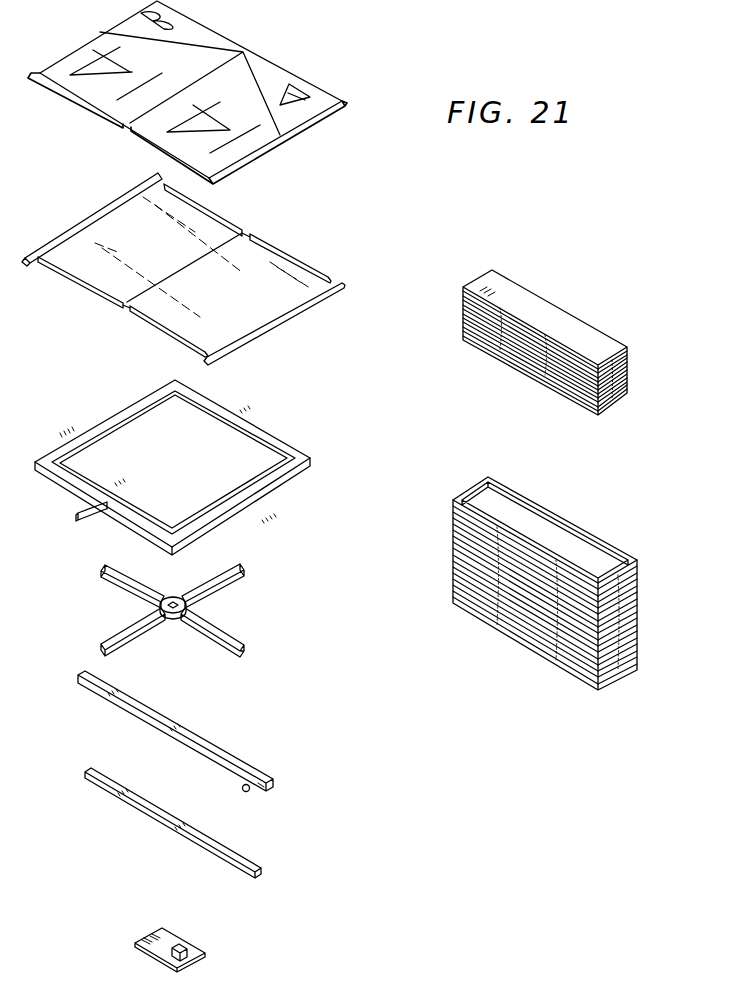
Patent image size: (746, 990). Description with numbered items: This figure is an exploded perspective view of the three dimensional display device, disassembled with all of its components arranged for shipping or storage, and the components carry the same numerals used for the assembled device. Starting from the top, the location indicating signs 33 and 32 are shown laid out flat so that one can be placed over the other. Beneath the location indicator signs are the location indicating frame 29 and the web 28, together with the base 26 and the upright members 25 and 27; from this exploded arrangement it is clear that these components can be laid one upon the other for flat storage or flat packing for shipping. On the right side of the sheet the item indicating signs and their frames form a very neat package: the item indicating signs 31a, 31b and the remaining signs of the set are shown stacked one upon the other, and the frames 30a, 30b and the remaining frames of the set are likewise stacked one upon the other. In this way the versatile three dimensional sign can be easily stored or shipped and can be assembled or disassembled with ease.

The location indicating sign 33 is at (267, 70).
The location indicating sign 32 is at (312, 278).
The location indicating frame 29 is at (277, 483).
The web 28 is at (227, 583).
The upright member 27 is at (227, 757).
The upright member 25 is at (237, 853).
The base 26 is at (207, 962).
The item indicating sign 31a is at (598, 340).
The item indicating sign 31b is at (615, 407).
The frame 30a is at (610, 552).
The frame 30b is at (620, 675).